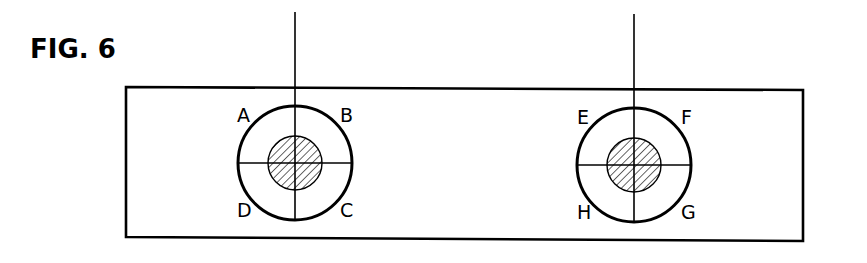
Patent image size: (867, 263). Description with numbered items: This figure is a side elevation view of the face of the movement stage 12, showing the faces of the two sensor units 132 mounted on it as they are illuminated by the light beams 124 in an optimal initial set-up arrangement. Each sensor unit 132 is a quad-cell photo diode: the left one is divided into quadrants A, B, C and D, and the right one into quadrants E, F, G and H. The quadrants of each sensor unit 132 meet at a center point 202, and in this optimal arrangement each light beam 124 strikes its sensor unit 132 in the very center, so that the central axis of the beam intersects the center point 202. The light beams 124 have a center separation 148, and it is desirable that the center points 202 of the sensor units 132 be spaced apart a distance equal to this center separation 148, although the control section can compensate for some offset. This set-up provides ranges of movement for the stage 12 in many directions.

The movement stage 12 is at (168, 117).
The center separation 148 is at (633, 42).
The light beams 124 is at (296, 186).
The sensor units 132 is at (352, 155).
The center point 202 is at (296, 165).